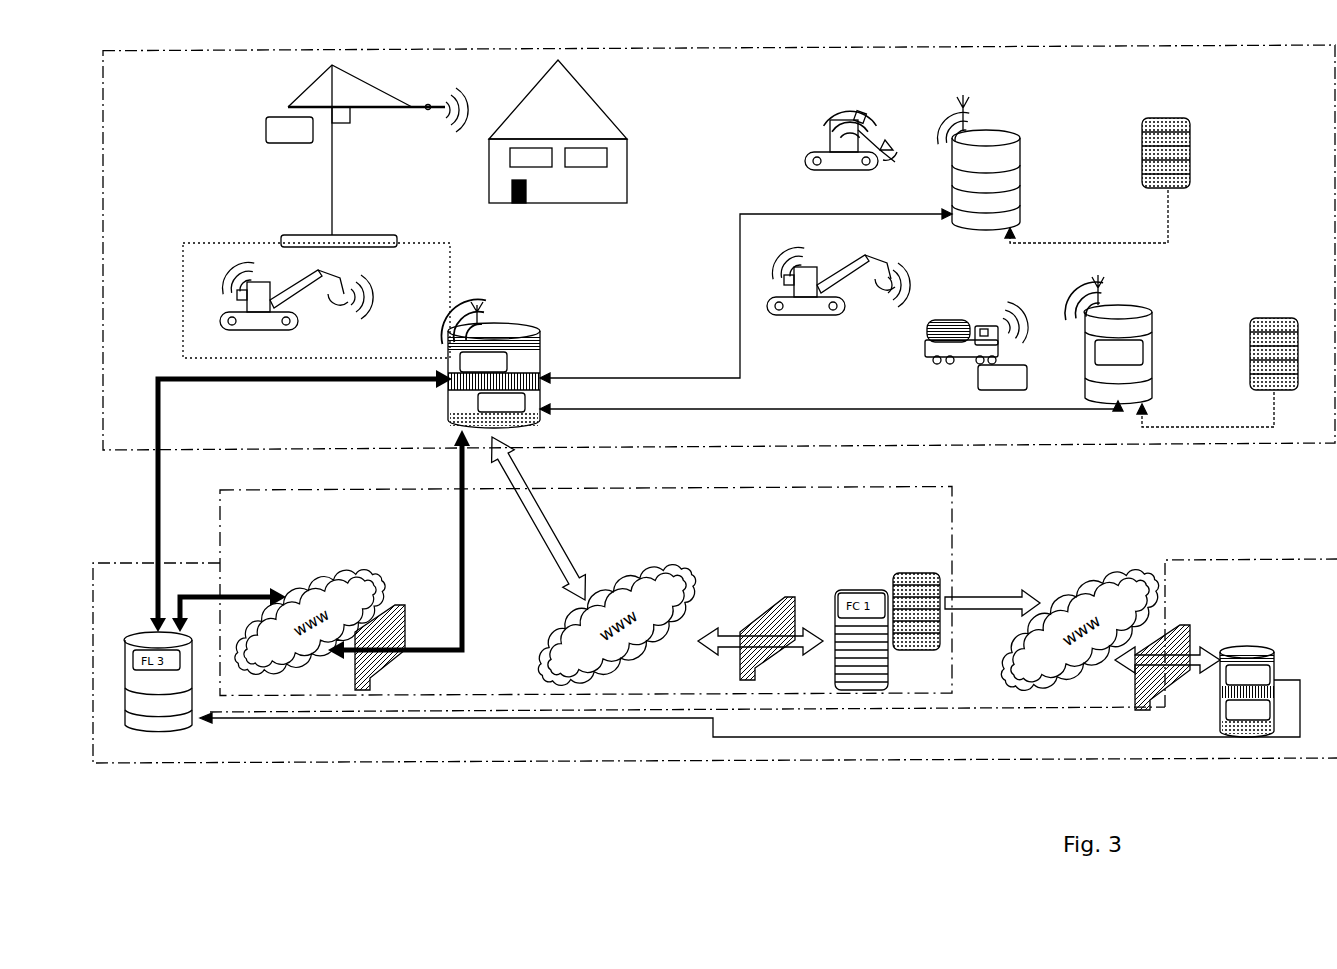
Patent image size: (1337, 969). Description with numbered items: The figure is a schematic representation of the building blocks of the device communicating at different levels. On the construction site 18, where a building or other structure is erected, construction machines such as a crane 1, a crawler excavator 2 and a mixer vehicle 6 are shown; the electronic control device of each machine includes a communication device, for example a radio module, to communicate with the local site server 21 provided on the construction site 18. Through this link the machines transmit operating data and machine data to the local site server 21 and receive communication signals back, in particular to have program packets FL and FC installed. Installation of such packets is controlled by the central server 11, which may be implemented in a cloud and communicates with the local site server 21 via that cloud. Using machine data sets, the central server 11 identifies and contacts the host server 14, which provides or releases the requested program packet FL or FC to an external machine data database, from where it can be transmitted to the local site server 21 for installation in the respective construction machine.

The crane 1 is at (272, 162).
The crawler excavator 2 is at (808, 324).
The mixer vehicle 6 is at (920, 364).
The central server 11 is at (1274, 652).
The host server 14 is at (1020, 135).
The construction site 18 is at (692, 127).
The local site server 21 is at (540, 333).